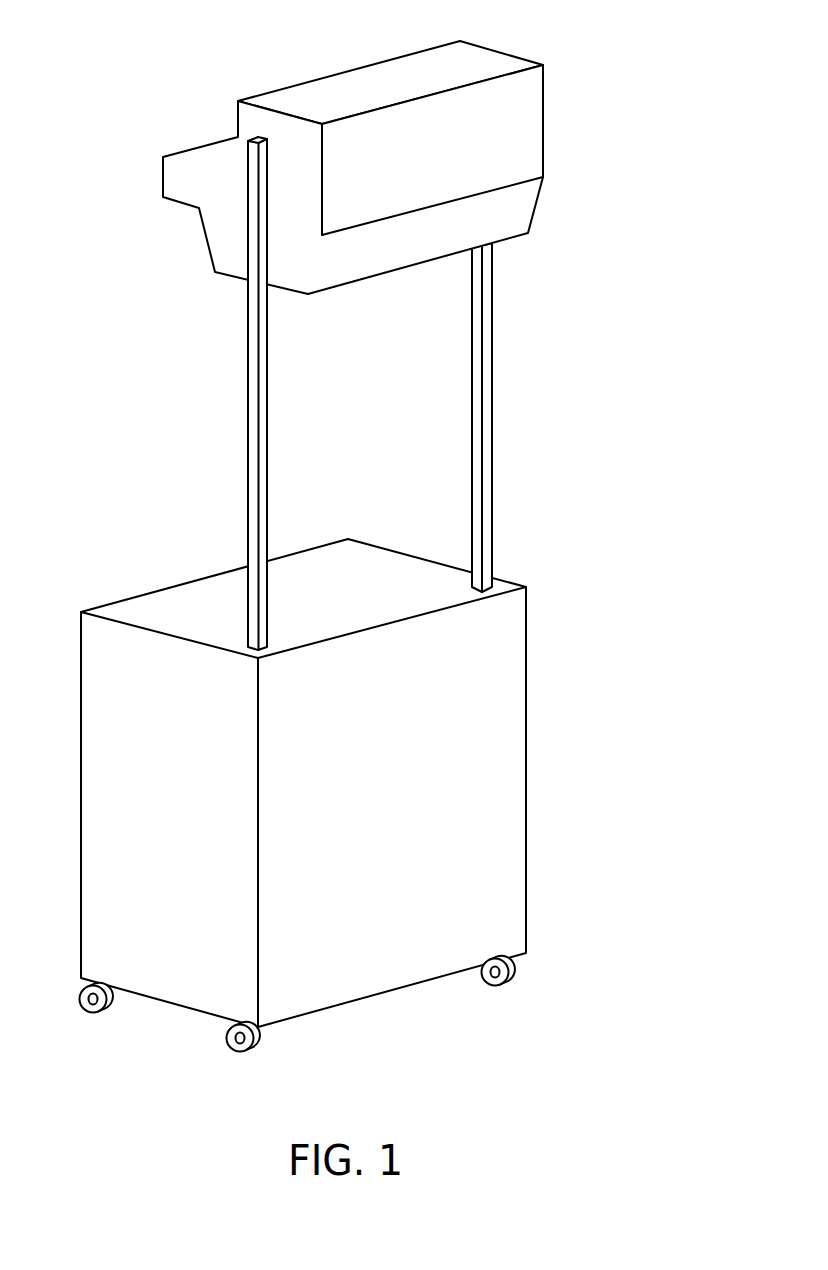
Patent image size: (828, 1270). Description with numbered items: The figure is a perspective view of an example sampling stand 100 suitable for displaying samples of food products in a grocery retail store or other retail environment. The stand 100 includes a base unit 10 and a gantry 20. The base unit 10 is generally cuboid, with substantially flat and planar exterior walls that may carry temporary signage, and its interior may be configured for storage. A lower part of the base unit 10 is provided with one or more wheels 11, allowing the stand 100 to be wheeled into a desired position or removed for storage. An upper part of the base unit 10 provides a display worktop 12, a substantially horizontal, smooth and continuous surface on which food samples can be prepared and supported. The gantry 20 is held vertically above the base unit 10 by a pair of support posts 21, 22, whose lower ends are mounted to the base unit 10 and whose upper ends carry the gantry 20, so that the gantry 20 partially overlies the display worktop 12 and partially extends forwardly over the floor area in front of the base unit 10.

The sampling stand 100 is at (576, 802).
The base unit 10 is at (344, 765).
The wheels 11 is at (518, 975).
The display worktop 12 is at (364, 543).
The gantry 20 is at (544, 149).
The support post 21 is at (267, 446).
The support post 22 is at (492, 401).